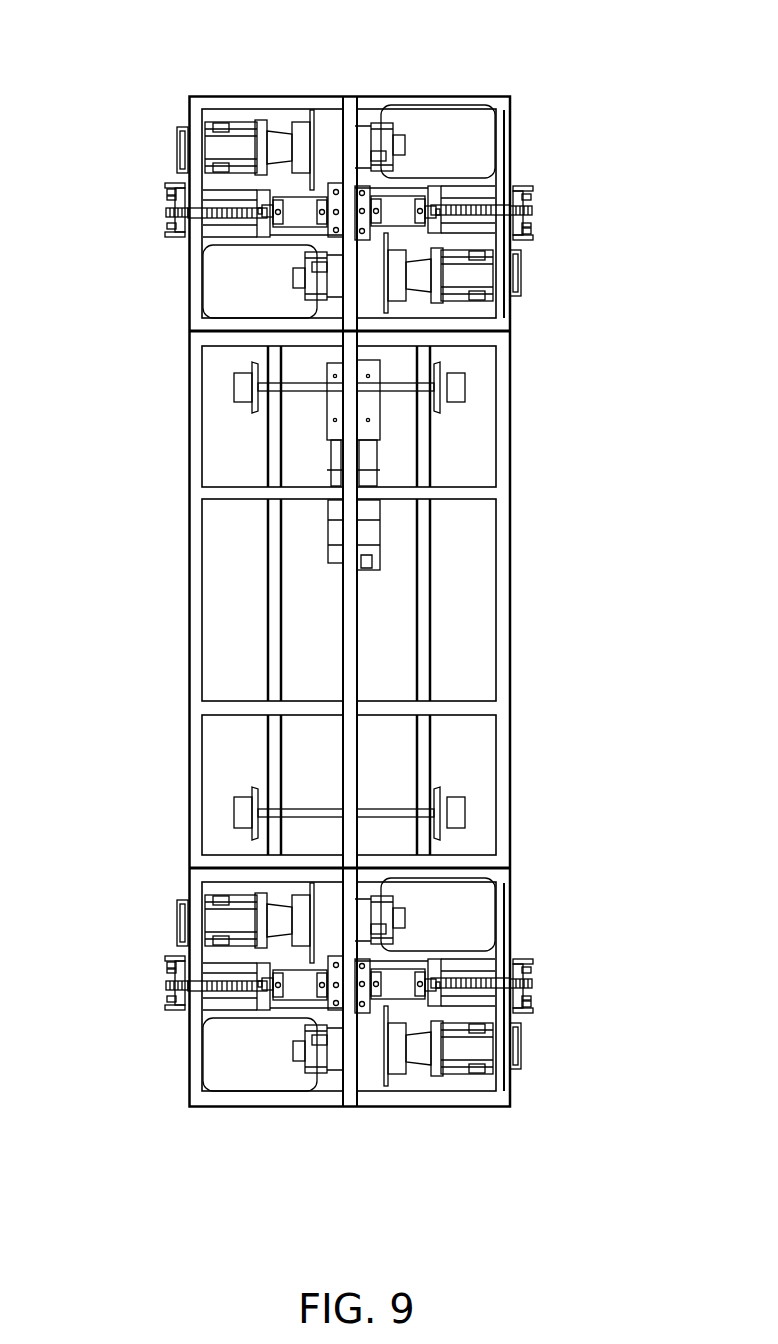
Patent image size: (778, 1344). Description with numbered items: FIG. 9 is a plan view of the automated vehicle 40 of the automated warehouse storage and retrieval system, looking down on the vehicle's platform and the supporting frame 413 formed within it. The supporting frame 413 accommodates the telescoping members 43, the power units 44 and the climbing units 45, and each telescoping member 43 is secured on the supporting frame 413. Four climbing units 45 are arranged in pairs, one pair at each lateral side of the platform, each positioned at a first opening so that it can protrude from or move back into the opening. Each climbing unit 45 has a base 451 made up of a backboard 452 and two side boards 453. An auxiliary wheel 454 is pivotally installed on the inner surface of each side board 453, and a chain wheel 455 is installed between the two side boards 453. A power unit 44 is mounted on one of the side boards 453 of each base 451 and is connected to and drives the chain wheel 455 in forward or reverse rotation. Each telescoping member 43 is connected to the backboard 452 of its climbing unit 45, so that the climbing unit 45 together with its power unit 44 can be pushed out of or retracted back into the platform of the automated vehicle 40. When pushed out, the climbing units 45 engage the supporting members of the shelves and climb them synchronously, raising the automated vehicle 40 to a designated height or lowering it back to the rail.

The automated vehicle 40 is at (178, 1095).
The supporting frame 413 is at (370, 100).
The telescoping member 43 is at (315, 216).
The power unit 44 is at (232, 135).
The climbing unit 45 is at (178, 172).
The base 451 is at (478, 965).
The backboard 452 is at (257, 237).
The side board 453 is at (167, 190).
The auxiliary wheel 454 is at (167, 198).
The chain wheel 455 is at (533, 212).